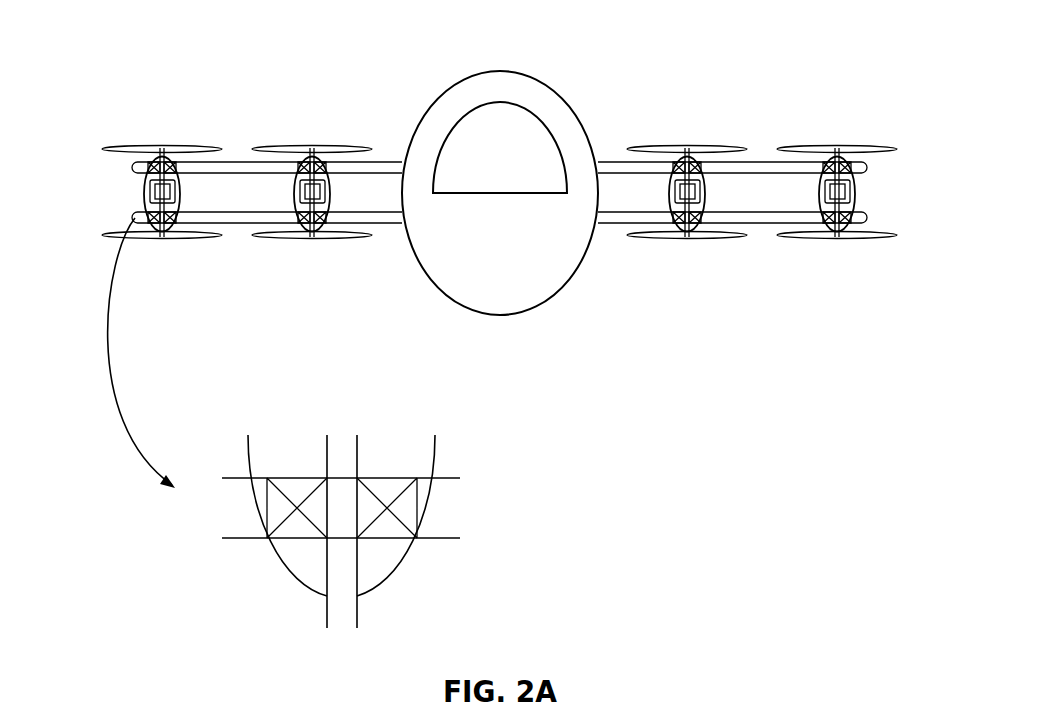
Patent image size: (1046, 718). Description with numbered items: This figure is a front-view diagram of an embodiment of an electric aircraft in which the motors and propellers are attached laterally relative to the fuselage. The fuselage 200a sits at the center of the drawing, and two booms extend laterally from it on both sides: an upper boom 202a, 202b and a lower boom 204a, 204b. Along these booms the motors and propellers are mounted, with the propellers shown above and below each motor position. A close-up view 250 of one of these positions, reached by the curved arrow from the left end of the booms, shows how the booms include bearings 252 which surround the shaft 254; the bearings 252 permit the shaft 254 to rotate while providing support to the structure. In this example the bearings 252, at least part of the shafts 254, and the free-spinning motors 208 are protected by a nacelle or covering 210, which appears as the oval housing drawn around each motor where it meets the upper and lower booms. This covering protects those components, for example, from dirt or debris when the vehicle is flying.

The fuselage 200a is at (501, 72).
The upper boom 202a is at (237, 162).
The upper boom 202b is at (763, 162).
The lower boom 204a is at (238, 223).
The lower boom 204b is at (763, 223).
The free-spinning motor 208 is at (145, 190).
The nacelle or covering 210 is at (847, 195).
The close-up view 250 is at (517, 485).
The bearing 252 is at (297, 478).
The shaft 254 is at (358, 442).